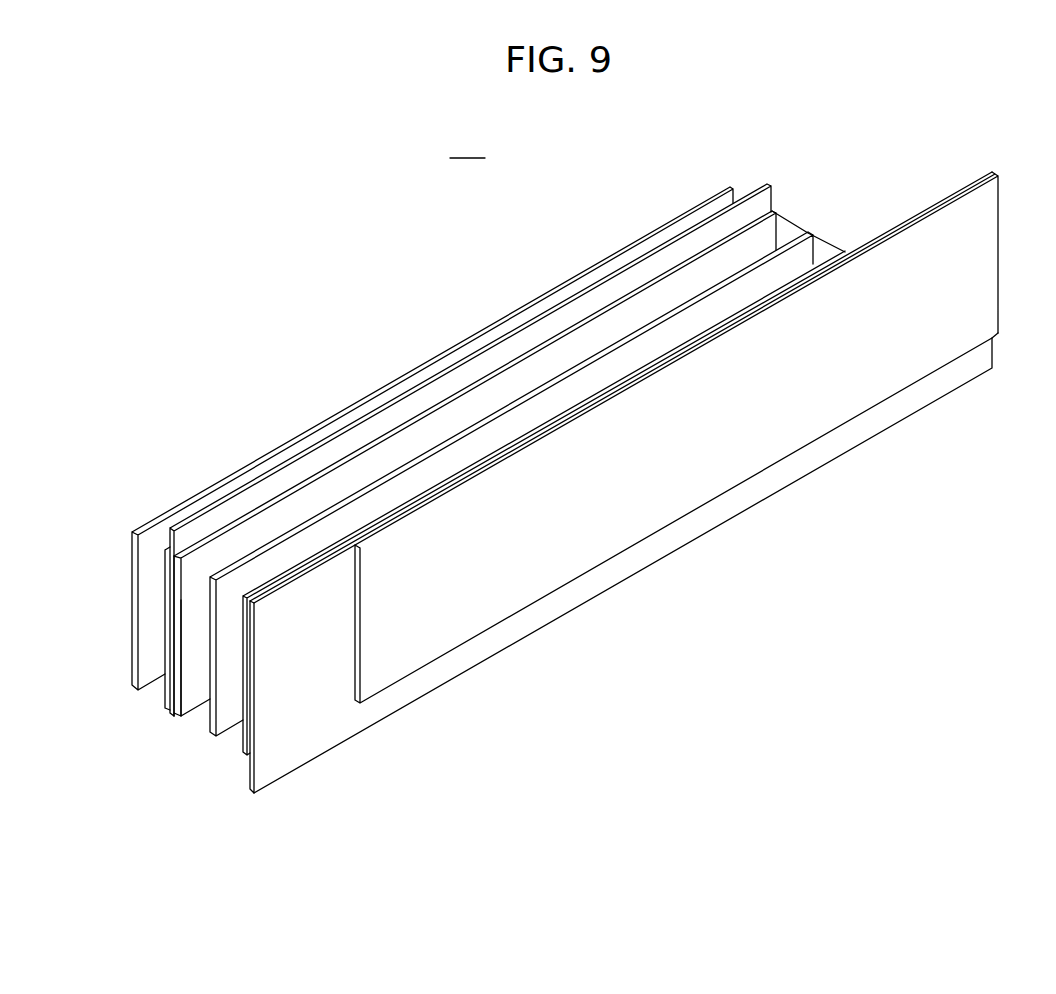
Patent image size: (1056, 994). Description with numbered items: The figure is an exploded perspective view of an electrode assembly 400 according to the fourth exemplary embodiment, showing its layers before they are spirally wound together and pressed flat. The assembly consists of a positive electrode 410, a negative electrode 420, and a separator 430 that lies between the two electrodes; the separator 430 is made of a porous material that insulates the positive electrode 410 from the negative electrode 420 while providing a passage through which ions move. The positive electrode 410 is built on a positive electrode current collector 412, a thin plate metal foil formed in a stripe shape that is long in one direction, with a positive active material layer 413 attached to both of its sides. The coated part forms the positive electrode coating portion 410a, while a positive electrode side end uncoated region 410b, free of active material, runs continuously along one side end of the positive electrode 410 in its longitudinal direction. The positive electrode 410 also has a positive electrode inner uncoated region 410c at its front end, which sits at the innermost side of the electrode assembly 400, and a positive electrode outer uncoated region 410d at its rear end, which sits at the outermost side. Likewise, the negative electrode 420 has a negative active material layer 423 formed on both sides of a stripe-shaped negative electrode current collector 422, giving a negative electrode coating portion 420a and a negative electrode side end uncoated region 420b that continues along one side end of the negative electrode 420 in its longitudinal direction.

The electrode assembly 400 is at (467, 146).
The positive electrode 410 is at (624, 466).
The positive electrode coating portion 410a is at (675, 487).
The positive electrode side end uncoated region 410b is at (575, 598).
The positive electrode inner uncoated region 410c is at (305, 721).
The positive electrode outer uncoated region 410d is at (952, 191).
The positive electrode current collector 412 is at (747, 313).
The positive active material layer 413 is at (702, 335).
The negative electrode 420 is at (455, 463).
The negative electrode coating portion 420a is at (403, 447).
The negative electrode side end uncoated region 420b is at (480, 370).
The negative electrode current collector 422 is at (167, 702).
The negative active material layer 423 is at (180, 636).
The separator 430 is at (338, 485).